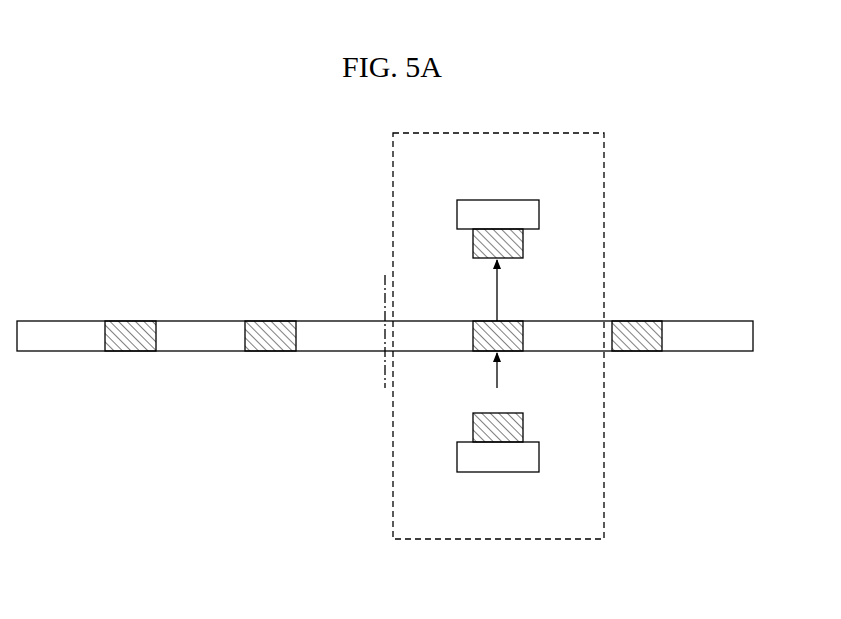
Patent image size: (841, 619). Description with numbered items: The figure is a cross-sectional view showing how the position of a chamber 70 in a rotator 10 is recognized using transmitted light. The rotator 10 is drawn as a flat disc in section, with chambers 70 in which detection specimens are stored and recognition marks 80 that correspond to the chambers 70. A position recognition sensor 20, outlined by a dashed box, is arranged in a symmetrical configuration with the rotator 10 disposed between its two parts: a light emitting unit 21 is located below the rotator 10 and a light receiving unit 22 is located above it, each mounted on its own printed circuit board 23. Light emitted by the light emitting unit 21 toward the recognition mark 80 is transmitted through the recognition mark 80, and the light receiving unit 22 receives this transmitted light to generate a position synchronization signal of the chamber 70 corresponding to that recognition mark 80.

The rotator 10 is at (693, 320).
The position recognition sensor 20 is at (497, 540).
The light emitting unit 21 is at (472, 428).
The light receiving unit 22 is at (472, 244).
The printed circuit board 23 is at (497, 199).
The chamber 70 is at (131, 320).
The recognition mark 80 is at (271, 320).